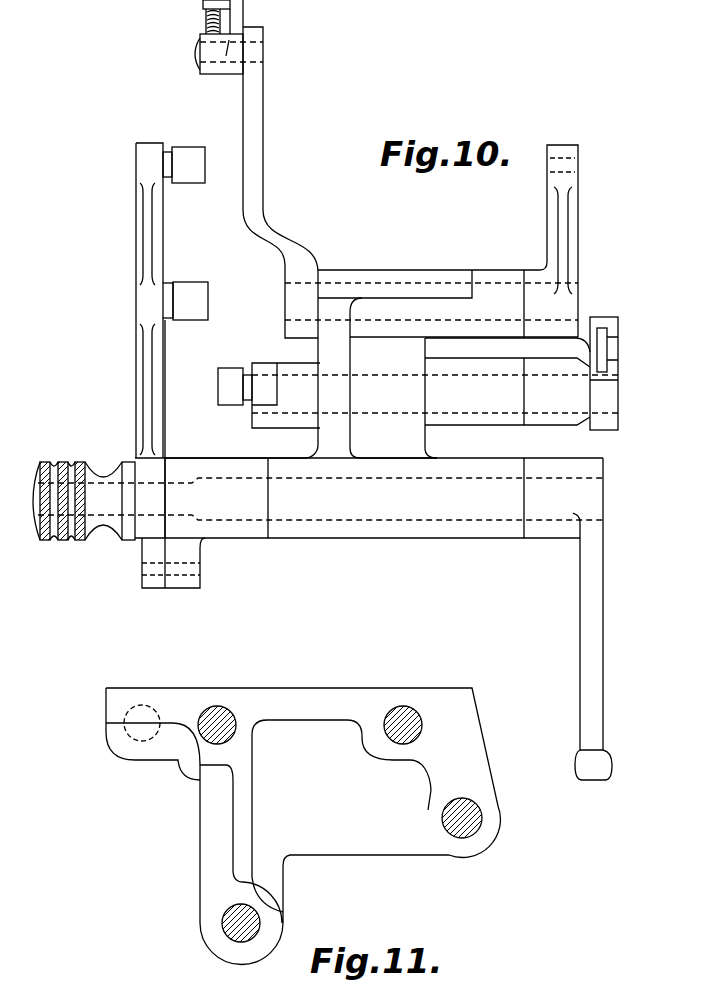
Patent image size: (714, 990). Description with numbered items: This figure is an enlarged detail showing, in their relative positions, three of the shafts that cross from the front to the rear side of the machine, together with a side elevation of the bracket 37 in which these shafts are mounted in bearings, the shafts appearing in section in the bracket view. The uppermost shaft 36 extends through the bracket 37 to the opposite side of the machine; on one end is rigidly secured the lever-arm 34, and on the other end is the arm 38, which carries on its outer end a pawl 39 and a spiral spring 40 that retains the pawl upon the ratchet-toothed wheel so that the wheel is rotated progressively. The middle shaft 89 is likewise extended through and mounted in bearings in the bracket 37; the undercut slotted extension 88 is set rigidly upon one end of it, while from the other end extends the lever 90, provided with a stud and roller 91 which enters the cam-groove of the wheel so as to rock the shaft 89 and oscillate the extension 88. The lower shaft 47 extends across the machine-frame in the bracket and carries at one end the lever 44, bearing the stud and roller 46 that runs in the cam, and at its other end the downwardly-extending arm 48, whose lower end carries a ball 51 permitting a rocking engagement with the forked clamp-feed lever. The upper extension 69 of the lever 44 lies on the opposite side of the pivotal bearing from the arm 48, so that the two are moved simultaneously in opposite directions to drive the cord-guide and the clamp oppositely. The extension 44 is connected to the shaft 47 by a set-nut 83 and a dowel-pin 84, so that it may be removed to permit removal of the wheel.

In FIG. 10, the lever-arm 34 is at (573, 210).
In FIG. 10, the shaft 36 is at (387, 290).
In FIG. 10, the bracket 37 is at (422, 537).
In FIG. 11, the bracket 37 is at (208, 800).
In FIG. 10, the arm 38 is at (265, 184).
In FIG. 10, the pawl 39 is at (210, 57).
In FIG. 10, the spiral spring 40 is at (206, 22).
In FIG. 10, the lever 44 is at (148, 380).
In FIG. 10, the stud and roller 46 is at (200, 302).
In FIG. 10, the shaft 47 is at (313, 512).
In FIG. 10, the downwardly-extending arm 48 is at (587, 612).
In FIG. 10, the ball 51 is at (608, 768).
In FIG. 10, the upper extension 69 is at (140, 229).
In FIG. 10, the set-nut 83 is at (60, 462).
In FIG. 10, the dowel-pin 84 is at (150, 570).
In FIG. 10, the undercut slotted extension 88 is at (614, 347).
In FIG. 10, the shaft 89 is at (485, 400).
In FIG. 10, the lever 90 is at (265, 375).
In FIG. 10, the stud and roller 91 is at (225, 384).